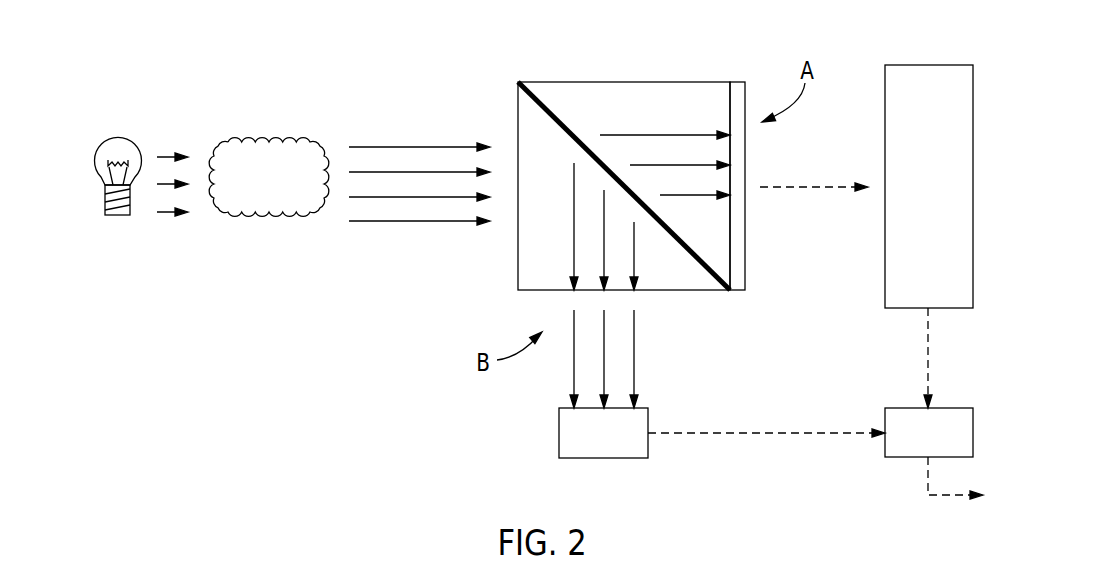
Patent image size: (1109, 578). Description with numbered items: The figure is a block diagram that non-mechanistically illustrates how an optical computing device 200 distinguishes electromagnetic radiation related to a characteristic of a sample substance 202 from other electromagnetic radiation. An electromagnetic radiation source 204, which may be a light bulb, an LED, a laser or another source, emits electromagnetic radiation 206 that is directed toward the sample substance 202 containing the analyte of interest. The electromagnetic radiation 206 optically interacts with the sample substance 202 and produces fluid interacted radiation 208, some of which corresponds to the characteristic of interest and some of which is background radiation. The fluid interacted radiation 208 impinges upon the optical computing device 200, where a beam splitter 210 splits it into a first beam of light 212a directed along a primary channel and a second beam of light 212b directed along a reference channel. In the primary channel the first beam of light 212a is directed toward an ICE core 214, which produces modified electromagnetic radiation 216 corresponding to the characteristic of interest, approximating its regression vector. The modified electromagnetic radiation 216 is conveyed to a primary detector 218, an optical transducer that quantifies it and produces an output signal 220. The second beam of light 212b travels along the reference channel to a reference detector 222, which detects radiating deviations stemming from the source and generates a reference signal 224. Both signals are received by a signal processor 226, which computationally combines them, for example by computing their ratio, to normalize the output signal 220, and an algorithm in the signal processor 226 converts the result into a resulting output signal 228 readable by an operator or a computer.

The optical computing device 200 is at (478, 46).
The sample substance 202 is at (258, 190).
The electromagnetic radiation source 204 is at (117, 140).
The electromagnetic radiation 206 is at (160, 156).
The fluid interacted radiation 208 is at (425, 155).
The beam splitter 210 is at (545, 102).
The first beam of light 212a is at (648, 135).
The second beam of light 212b is at (572, 255).
The ICE core 214 is at (747, 90).
The modified electromagnetic radiation 216 is at (788, 187).
The primary detector 218 is at (913, 197).
The output signal 220 is at (927, 352).
The reference detector 222 is at (588, 445).
The reference signal 224 is at (760, 433).
The signal processor 226 is at (913, 445).
The resulting output signal 228 is at (928, 473).